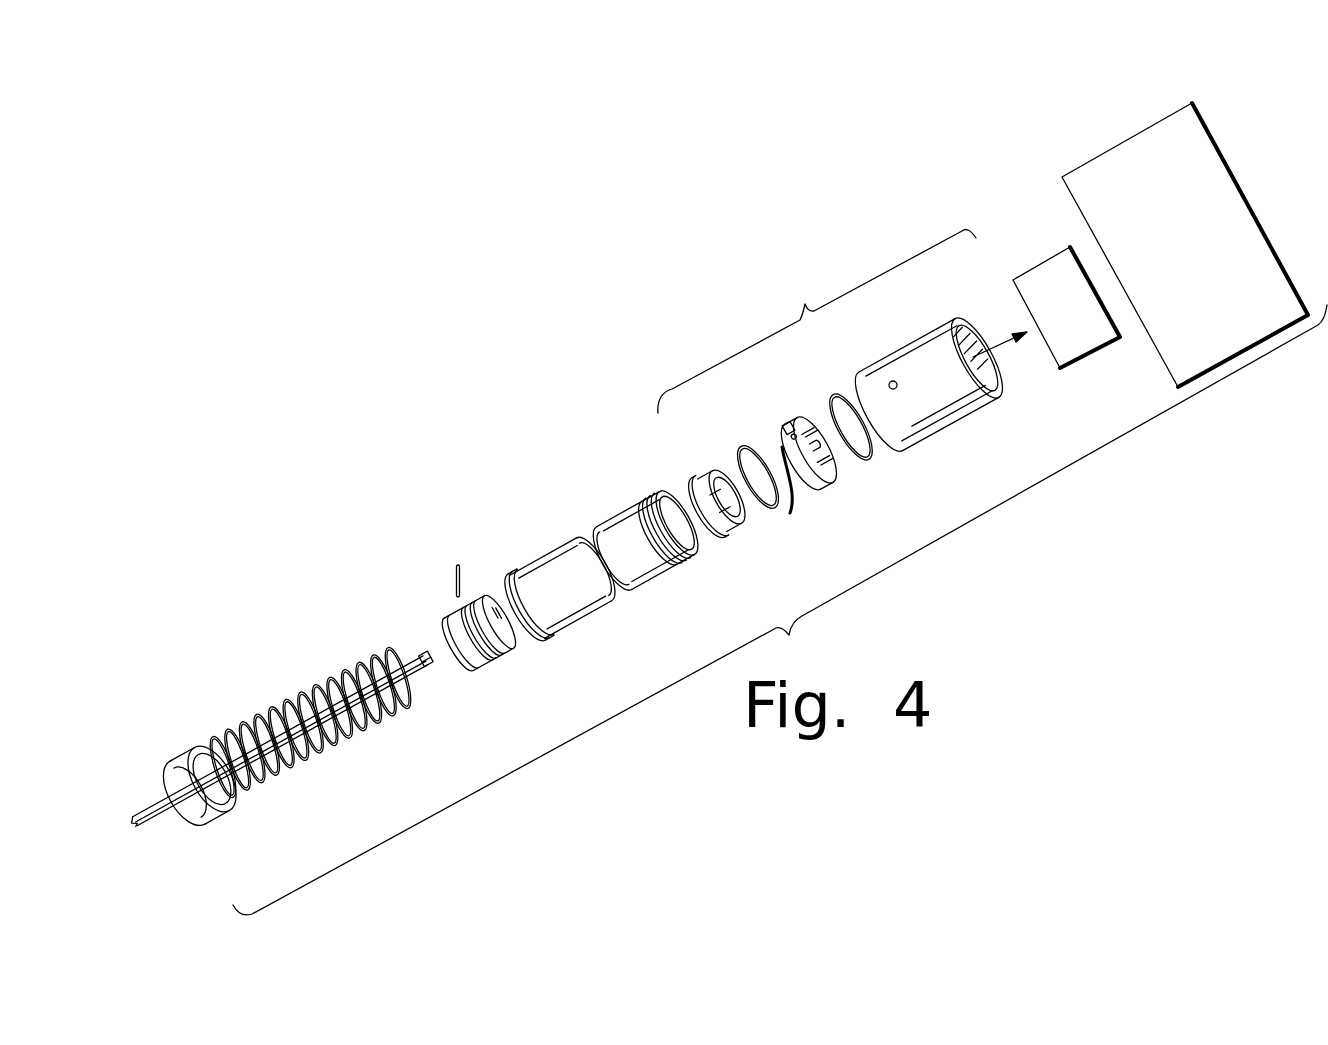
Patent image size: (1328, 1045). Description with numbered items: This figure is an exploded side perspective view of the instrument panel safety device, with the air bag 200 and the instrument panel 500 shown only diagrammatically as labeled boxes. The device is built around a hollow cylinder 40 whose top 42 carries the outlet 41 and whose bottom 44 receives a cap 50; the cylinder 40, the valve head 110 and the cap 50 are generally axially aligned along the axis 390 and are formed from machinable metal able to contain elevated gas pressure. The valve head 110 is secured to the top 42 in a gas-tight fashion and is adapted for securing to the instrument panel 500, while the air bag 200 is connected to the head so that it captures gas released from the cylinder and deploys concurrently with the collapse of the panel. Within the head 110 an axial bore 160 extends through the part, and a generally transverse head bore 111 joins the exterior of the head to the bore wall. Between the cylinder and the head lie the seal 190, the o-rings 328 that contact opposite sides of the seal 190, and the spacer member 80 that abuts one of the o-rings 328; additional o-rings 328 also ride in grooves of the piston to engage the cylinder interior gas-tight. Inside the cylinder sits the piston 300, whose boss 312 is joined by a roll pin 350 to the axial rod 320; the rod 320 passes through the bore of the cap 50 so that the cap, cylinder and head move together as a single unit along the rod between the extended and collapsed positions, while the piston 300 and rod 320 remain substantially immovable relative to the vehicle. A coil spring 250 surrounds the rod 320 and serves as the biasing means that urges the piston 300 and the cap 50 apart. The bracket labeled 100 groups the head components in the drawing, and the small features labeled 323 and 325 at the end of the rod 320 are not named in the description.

The hollow cylinder 40 is at (578, 459).
The outlet 41 is at (607, 607).
The top of cylinder 42 is at (662, 482).
The bottom of cylinder 44 is at (540, 637).
The cap 50 is at (176, 752).
The spacer member 80 is at (702, 468).
The inflator assembly 100 is at (817, 321).
The valve head 110 is at (922, 340).
The transverse head bore 111 is at (898, 389).
The axial bore 160 is at (993, 378).
The seal 190 is at (788, 424).
The air bag 200 is at (1020, 272).
The coil spring 250 is at (321, 760).
The piston 300 is at (487, 597).
The boss 312 is at (446, 630).
The axial rod 320 is at (229, 800).
The rod end 323 is at (422, 657).
The rod 325 is at (428, 678).
The o-ring 328 is at (762, 515).
The roll pin 350 is at (458, 562).
The axis 390 is at (986, 330).
The instrument panel 500 is at (1173, 107).